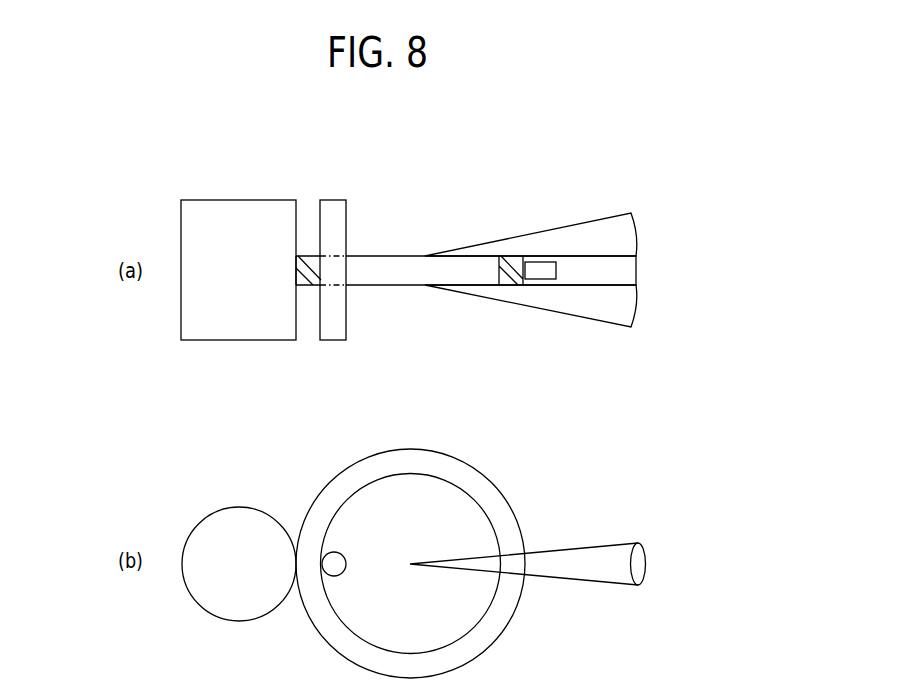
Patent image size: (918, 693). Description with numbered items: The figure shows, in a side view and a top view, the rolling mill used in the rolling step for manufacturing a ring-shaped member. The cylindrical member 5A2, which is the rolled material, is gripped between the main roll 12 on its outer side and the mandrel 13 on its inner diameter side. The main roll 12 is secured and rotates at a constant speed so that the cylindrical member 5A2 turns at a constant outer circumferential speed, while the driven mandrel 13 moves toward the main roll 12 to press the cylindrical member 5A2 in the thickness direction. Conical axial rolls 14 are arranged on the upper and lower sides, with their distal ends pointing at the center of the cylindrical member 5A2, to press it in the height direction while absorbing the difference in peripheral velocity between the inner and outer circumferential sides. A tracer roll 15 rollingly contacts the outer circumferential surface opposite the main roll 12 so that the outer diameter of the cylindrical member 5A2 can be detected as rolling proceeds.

The main roll 12 is at (230, 200).
The mandrel 13 is at (334, 200).
The cylindrical member 5A2 is at (381, 252).
The axial rolls 14 is at (633, 228).
The tracer roll 15 is at (556, 270).